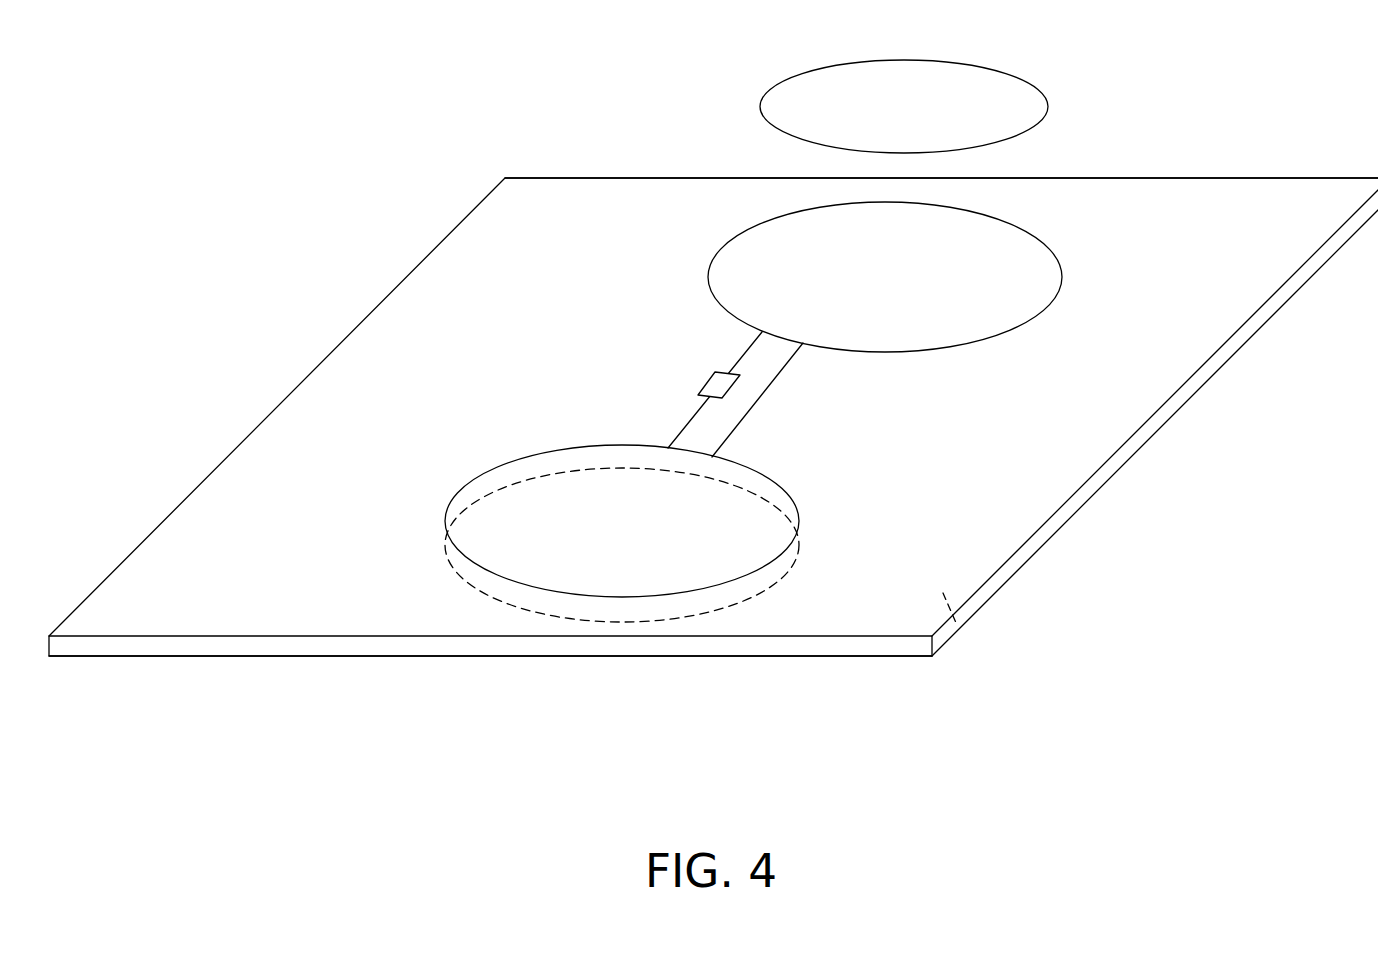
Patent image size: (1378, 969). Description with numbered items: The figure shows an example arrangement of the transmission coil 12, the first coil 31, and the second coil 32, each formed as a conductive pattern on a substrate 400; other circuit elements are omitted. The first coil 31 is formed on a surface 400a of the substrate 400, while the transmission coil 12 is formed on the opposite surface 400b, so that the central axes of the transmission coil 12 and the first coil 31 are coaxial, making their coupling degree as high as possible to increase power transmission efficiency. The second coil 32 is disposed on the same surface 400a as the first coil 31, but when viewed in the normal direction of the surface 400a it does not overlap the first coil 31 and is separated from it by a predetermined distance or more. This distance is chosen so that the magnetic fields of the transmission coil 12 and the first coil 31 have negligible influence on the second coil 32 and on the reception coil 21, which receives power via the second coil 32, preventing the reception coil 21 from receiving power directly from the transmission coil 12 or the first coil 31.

The transmission coil 12 is at (497, 603).
The reception coil 21 is at (1048, 108).
The first coil 31 is at (456, 498).
The second coil 32 is at (1062, 270).
The substrate 400 is at (1095, 480).
The surface 400a is at (1257, 210).
The surface 400b is at (958, 628).